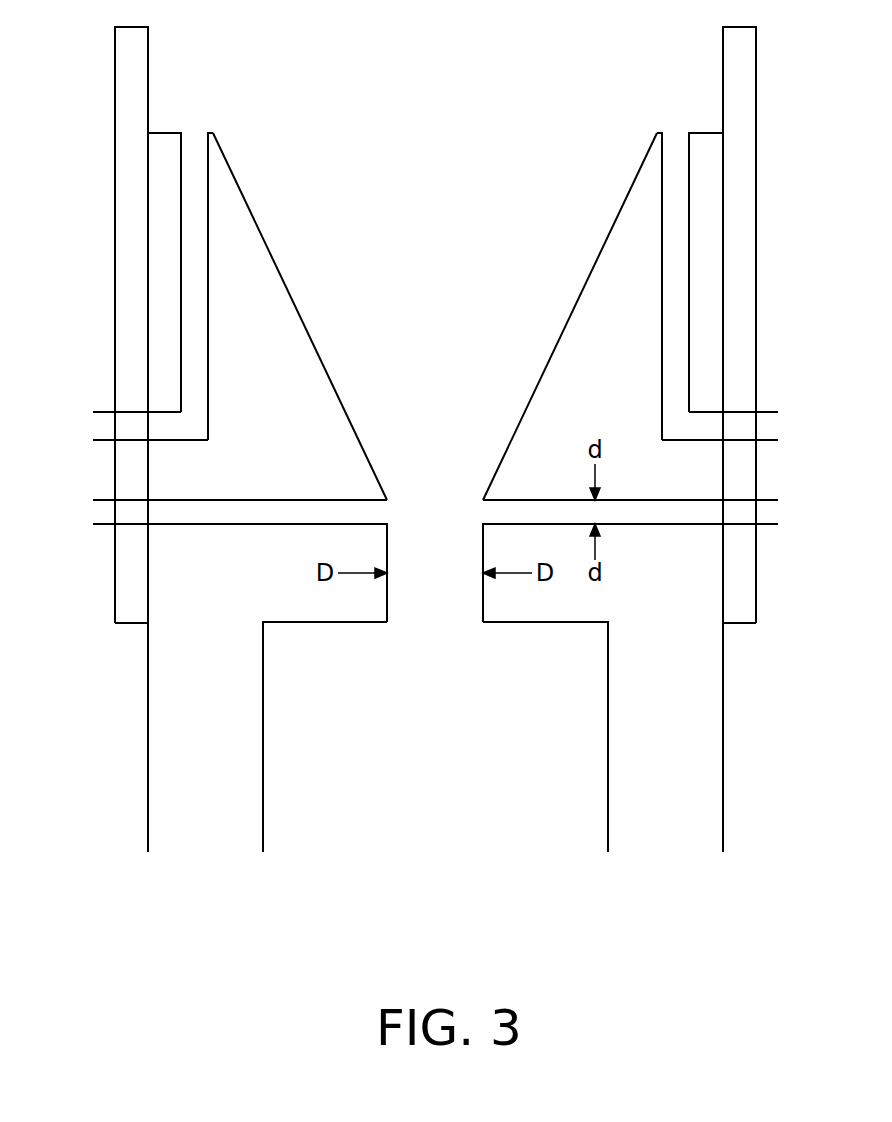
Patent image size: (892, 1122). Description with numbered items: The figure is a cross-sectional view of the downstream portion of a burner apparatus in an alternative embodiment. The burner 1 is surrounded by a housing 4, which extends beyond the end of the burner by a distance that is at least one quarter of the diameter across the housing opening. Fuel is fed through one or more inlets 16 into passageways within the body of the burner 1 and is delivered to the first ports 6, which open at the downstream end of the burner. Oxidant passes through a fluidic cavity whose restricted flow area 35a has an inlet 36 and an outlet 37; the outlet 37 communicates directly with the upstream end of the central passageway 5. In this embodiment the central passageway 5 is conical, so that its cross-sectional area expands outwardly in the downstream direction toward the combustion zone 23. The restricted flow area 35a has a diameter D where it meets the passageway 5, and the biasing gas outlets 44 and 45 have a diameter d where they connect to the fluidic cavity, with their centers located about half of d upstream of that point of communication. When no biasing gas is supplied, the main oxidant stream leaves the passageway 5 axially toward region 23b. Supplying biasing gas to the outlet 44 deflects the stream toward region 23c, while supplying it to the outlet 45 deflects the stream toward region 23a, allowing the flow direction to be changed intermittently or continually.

The burner 1 is at (435, 286).
The housing 4 is at (435, 439).
The central passageway 5 is at (433, 232).
The first ports 6 is at (435, 256).
The inlets 16 is at (435, 425).
The combustion zone 23 is at (436, 77).
The region 23a is at (299, 300).
The region 23b is at (435, 115).
The region 23c is at (570, 300).
The restricted flow area 35a is at (435, 573).
The inlet 36 is at (435, 734).
The outlet 37 is at (435, 493).
The outlet 44 is at (345, 513).
The outlet 45 is at (525, 513).